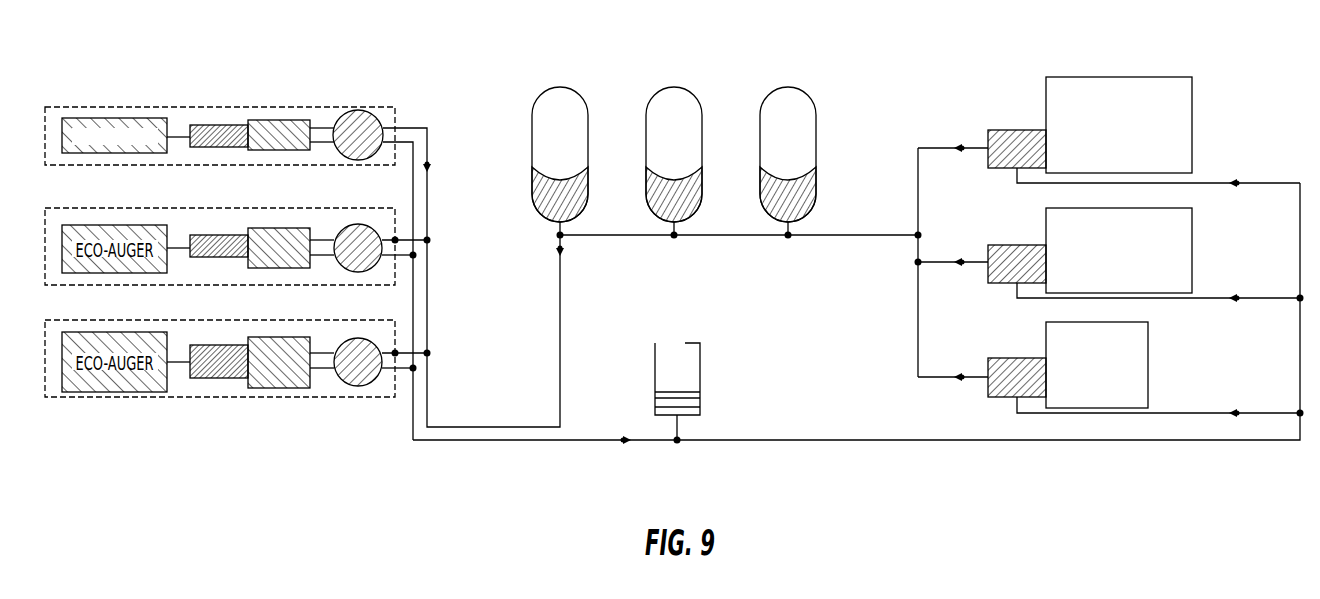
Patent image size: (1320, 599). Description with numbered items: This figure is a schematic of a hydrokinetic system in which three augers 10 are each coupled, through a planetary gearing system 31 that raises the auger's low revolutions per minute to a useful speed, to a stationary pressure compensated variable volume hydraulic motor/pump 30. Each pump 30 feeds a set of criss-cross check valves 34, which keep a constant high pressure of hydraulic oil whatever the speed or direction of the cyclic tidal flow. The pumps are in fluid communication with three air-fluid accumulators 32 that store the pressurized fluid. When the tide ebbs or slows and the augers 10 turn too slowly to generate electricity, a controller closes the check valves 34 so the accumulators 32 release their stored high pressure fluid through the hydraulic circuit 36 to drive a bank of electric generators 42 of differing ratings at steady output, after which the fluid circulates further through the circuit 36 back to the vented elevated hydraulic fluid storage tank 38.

The auger 10 is at (130, 112).
The hydraulic motor/pump 30 is at (282, 112).
The planetary gearing system 31 is at (209, 116).
The air-fluid accumulator 32 is at (777, 100).
The criss-cross check valves 34 is at (386, 112).
The hydraulic circuit 36 is at (488, 441).
The hydraulic fluid storage tank 38 is at (659, 335).
The electric generator 42 is at (1120, 367).